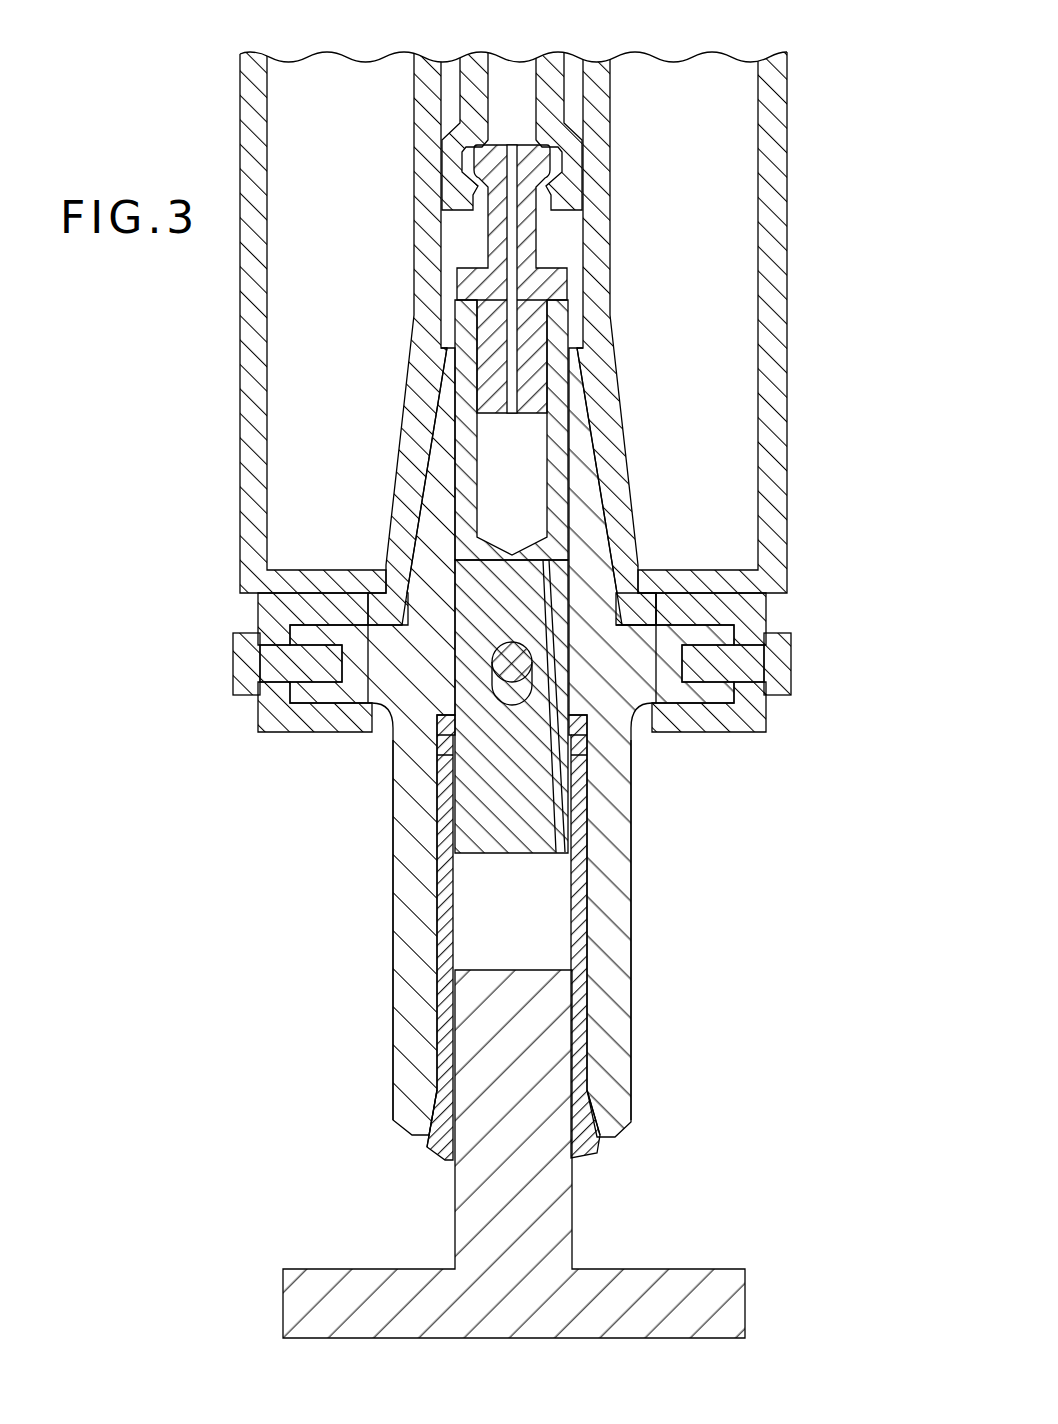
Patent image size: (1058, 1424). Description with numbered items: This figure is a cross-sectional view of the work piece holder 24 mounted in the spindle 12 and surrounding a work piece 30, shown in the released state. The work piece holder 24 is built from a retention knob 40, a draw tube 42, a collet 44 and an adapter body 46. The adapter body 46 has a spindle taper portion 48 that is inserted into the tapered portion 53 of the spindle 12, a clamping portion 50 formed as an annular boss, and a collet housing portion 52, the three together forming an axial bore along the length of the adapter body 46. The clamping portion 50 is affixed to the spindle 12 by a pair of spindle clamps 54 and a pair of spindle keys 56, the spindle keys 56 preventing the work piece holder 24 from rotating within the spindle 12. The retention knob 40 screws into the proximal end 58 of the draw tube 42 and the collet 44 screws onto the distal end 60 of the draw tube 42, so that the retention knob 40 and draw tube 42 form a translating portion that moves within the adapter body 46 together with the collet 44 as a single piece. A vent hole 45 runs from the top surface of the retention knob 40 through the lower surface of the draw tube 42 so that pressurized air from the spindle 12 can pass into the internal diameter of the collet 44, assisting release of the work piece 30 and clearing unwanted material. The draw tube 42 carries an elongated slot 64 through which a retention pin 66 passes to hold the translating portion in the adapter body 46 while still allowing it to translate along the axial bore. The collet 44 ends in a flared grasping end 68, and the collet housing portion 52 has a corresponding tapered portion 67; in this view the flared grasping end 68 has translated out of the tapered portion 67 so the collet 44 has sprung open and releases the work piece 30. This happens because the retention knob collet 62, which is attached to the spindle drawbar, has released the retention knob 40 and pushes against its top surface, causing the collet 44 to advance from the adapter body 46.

The spindle 12 is at (705, 332).
The work piece holder 24 is at (262, 843).
The work piece 30 is at (697, 1265).
The retention knob 40 is at (527, 252).
The draw tube 42 is at (518, 597).
The collet 44 is at (445, 940).
The vent hole 45 is at (513, 227).
The adapter body 46 is at (612, 683).
The spindle taper portion 48 is at (436, 532).
The clamping portion 50 is at (368, 663).
The collet housing portion 52 is at (605, 975).
The tapered portion 53 is at (608, 423).
The spindle clamps 54 is at (262, 610).
The spindle keys 56 is at (236, 663).
The proximal end 58 is at (467, 330).
The distal end 60 is at (528, 820).
The retention knob collet 62 is at (552, 58).
The elongated slot 64 is at (510, 695).
The retention pin 66 is at (527, 650).
The tapered portion 67 is at (600, 1110).
The flared grasping end 68 is at (430, 1158).